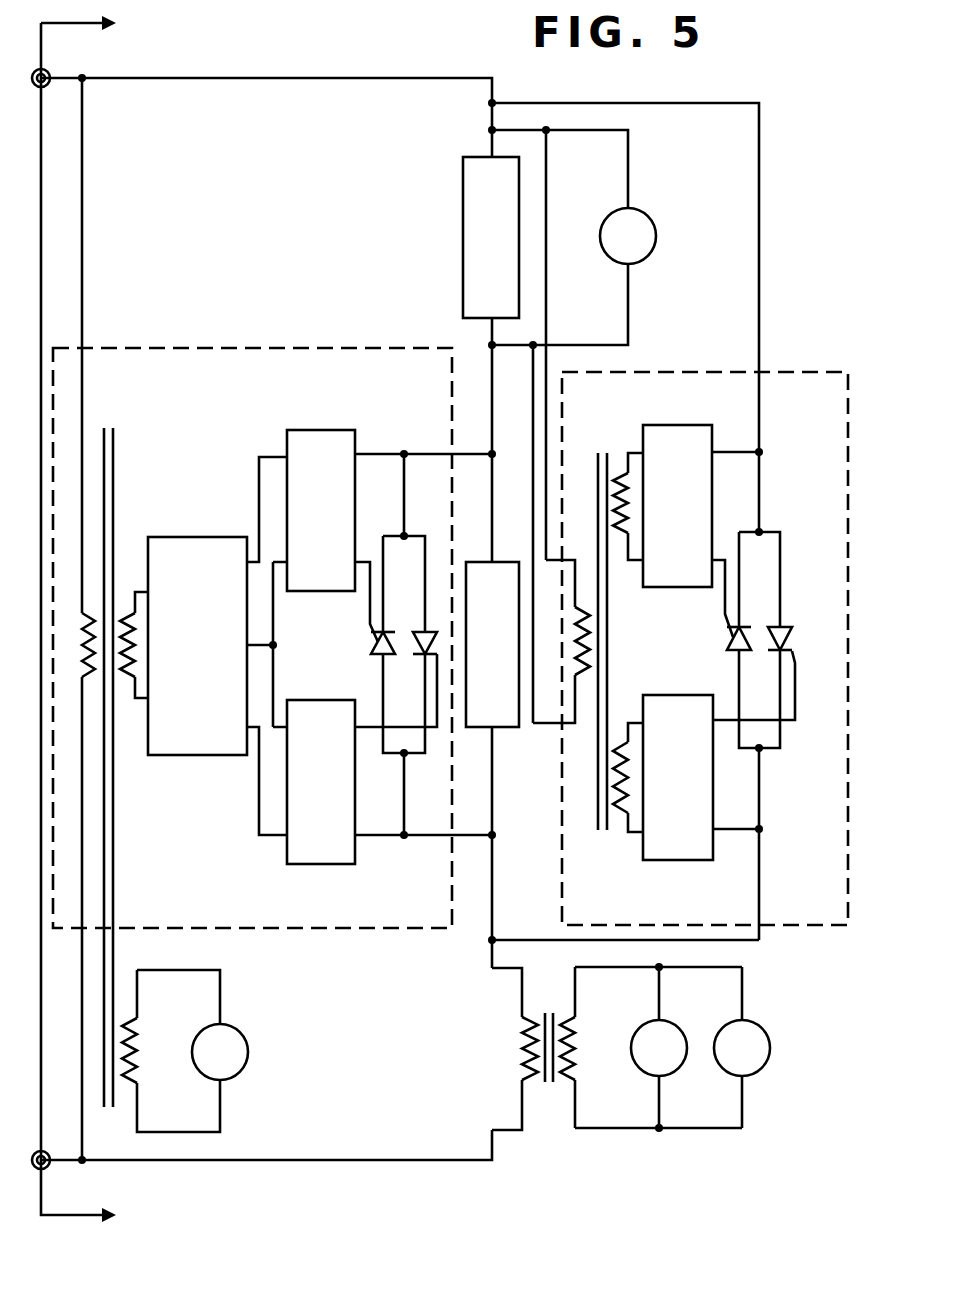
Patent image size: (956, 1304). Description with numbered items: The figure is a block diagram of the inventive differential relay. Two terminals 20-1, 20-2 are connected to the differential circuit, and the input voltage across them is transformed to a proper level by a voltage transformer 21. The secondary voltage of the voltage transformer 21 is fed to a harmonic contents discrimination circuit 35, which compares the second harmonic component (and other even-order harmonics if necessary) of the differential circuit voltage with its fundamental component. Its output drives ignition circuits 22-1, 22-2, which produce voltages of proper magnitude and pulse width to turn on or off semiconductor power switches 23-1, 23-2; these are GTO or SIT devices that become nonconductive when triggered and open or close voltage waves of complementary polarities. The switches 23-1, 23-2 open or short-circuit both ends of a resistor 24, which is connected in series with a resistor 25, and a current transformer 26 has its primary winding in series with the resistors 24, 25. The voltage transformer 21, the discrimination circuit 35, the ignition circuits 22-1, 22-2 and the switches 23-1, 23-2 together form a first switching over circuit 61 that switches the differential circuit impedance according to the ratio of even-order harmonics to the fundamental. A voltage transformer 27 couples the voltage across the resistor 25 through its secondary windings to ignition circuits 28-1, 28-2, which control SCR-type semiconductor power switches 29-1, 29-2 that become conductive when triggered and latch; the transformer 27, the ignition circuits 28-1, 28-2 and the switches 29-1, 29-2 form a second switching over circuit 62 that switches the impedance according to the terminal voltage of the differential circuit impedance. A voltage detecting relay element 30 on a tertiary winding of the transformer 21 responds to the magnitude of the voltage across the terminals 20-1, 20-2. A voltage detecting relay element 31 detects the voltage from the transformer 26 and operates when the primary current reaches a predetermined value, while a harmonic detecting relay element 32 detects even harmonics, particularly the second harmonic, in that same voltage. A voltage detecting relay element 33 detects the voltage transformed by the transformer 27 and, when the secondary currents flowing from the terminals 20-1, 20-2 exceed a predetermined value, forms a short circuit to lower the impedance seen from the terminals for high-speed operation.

The terminal 20-1 is at (48, 71).
The terminal 20-2 is at (48, 1167).
The voltage transformer 21 is at (120, 680).
The ignition circuit 22-1 is at (291, 432).
The ignition circuit 22-2 is at (317, 864).
The semiconductor power switch 23-1 is at (380, 641).
The semiconductor power switch 23-2 is at (425, 658).
The resistor 24 is at (478, 562).
The resistor 25 is at (463, 230).
The current transformer 26 is at (521, 1055).
The voltage transformer 27 is at (603, 453).
The ignition circuit 28-1 is at (705, 402).
The ignition circuit 28-2 is at (690, 672).
The semiconductor power switch 29-1 is at (731, 634).
The semiconductor power switch 29-2 is at (785, 626).
The voltage detecting relay element 30 is at (233, 1060).
The voltage detecting relay element 31 is at (678, 1036).
The harmonic detecting relay element 32 is at (768, 1034).
The voltage detecting relay element 33 is at (656, 240).
The harmonic contents discrimination circuit 35 is at (201, 537).
The first switching over circuit 61 is at (200, 347).
The second switching over circuit 62 is at (563, 866).